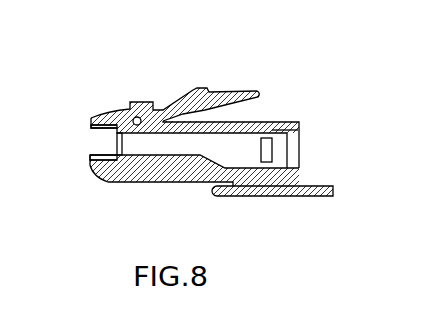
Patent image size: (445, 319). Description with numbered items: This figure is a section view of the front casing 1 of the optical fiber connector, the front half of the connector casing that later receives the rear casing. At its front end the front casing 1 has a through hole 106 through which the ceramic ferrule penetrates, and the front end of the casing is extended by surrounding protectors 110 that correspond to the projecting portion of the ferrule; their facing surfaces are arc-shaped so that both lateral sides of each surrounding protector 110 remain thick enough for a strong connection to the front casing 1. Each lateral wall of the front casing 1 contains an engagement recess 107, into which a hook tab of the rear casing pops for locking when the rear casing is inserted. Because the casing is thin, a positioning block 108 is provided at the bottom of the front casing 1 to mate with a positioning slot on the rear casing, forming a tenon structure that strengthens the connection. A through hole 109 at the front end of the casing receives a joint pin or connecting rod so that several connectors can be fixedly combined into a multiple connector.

The front casing 1 is at (167, 180).
The through hole 106 is at (115, 152).
The engagement recess 107 is at (268, 143).
The positioning block 108 is at (318, 193).
The through hole 109 is at (134, 118).
The surrounding protector 110 is at (90, 162).